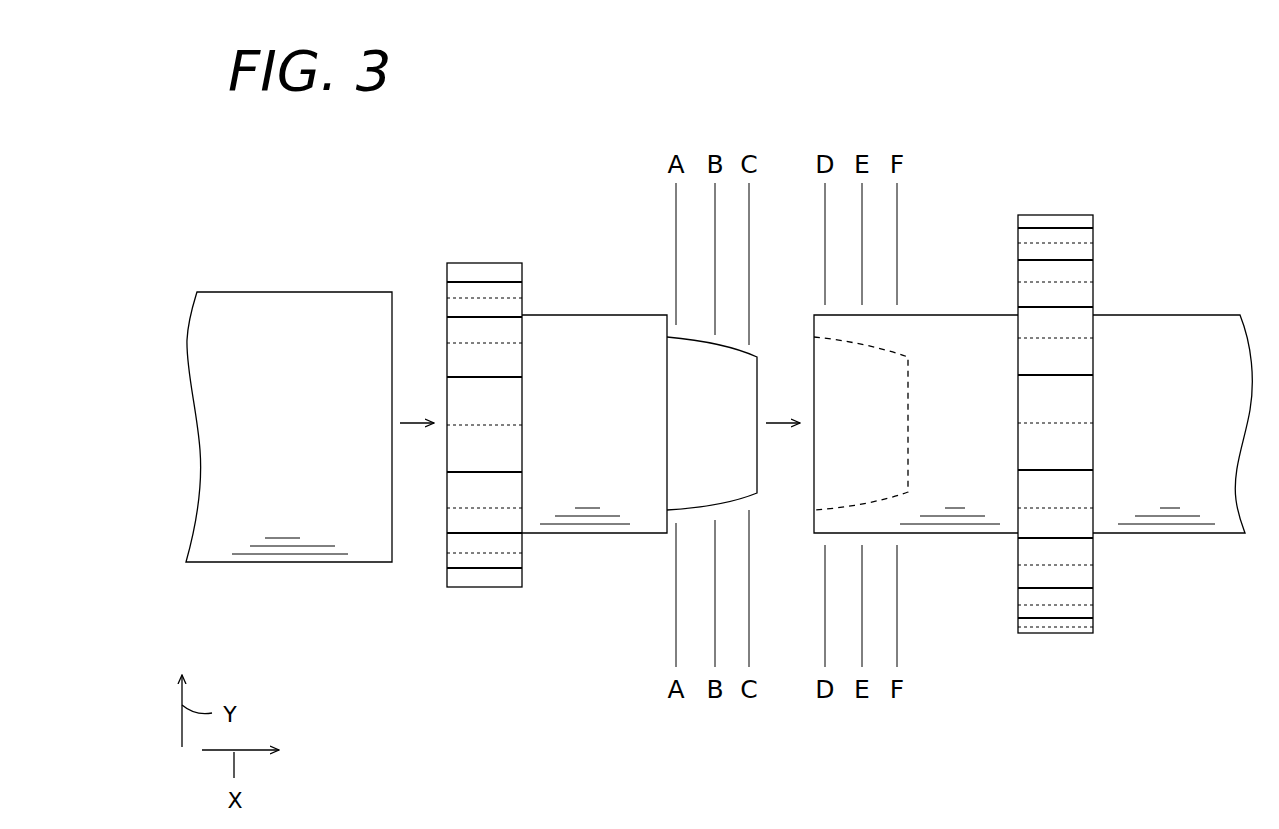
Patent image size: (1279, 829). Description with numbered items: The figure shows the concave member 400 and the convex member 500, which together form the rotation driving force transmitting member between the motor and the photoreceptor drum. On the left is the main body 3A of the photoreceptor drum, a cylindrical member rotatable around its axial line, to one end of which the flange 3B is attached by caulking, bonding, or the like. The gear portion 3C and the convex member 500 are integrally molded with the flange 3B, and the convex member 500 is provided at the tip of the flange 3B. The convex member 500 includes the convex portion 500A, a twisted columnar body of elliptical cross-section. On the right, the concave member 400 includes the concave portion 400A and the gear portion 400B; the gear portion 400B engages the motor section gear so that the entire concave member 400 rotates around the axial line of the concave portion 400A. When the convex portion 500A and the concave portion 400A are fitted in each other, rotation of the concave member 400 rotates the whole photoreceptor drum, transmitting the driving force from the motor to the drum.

The main body 3A is at (263, 308).
The flange 3B is at (522, 155).
The gear portion 3C is at (483, 276).
The convex member 500 is at (590, 238).
The convex portion 500A is at (683, 485).
The concave member 400 is at (1143, 130).
The concave portion 400A is at (950, 325).
The gear portion 400B is at (1052, 238).